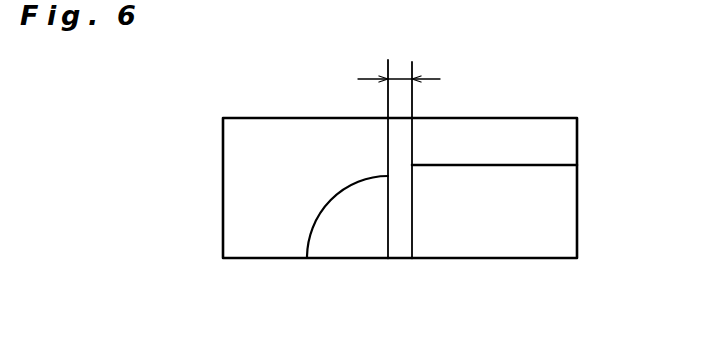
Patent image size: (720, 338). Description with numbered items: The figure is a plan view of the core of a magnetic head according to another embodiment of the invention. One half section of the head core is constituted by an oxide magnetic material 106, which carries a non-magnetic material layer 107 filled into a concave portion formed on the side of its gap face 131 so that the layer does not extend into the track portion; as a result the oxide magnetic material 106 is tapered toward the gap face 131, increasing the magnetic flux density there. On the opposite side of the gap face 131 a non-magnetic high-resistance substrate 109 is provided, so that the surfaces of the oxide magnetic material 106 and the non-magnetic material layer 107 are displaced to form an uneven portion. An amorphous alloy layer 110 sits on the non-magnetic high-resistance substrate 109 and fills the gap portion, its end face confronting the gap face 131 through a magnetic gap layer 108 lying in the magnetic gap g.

The oxide magnetic material 106 is at (293, 132).
The non-magnetic material layer 107 is at (348, 247).
The magnetic gap layer 108 is at (398, 247).
The non-magnetic high-resistance substrate 109 is at (560, 250).
The amorphous alloy layer 110 is at (565, 138).
The gap face 131 is at (388, 143).
The magnetic gap g is at (399, 60).